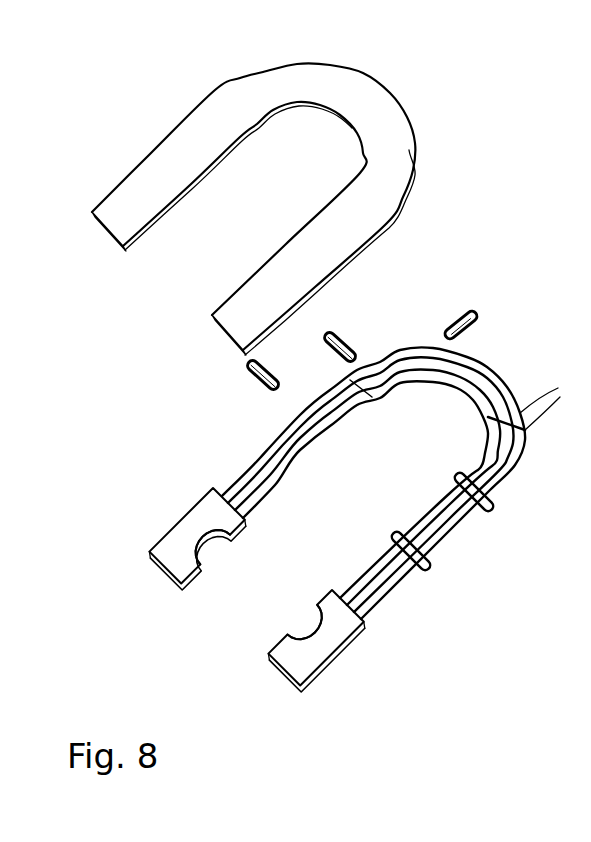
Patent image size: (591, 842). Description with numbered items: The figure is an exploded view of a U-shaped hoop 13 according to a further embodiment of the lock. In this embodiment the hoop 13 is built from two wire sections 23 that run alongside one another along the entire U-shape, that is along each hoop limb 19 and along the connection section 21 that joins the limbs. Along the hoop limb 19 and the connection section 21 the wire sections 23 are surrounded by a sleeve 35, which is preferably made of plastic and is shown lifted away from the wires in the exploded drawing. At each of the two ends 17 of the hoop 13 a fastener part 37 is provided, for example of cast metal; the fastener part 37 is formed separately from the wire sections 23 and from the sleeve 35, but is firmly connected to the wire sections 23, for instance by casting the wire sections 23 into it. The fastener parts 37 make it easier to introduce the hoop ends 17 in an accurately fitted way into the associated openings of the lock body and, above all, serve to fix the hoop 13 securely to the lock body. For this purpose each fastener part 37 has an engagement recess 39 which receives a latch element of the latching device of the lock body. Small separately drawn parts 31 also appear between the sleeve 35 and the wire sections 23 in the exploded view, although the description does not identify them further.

The hoop 13 is at (478, 140).
The hoop end 17 is at (144, 567).
The hoop limb 19 is at (263, 464).
The connection section 21 is at (375, 485).
The wire section 23 is at (560, 393).
The pins 31 is at (347, 346).
The sleeve 35 is at (190, 145).
The fastener part 37 is at (175, 545).
The engagement recess 39 is at (299, 627).